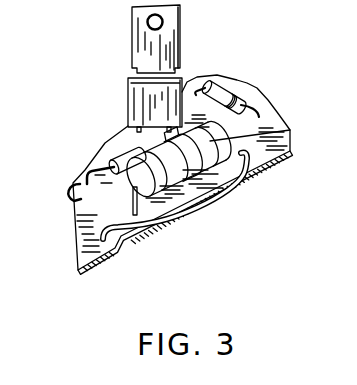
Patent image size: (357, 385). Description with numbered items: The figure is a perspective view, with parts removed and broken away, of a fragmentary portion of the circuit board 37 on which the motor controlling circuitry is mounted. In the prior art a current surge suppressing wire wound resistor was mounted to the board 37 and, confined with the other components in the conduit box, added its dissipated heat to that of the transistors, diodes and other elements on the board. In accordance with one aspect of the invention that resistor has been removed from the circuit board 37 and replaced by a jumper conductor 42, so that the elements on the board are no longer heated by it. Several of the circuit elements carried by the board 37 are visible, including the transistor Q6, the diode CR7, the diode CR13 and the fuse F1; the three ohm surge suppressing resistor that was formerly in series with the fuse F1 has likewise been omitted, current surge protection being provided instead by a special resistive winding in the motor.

The transistor Q6 is at (146, 102).
The diode CR7 is at (230, 88).
The diode CR13 is at (127, 153).
The circuit board 37 is at (272, 104).
The fuse F1 is at (289, 131).
The jumper conductor 42 is at (217, 209).